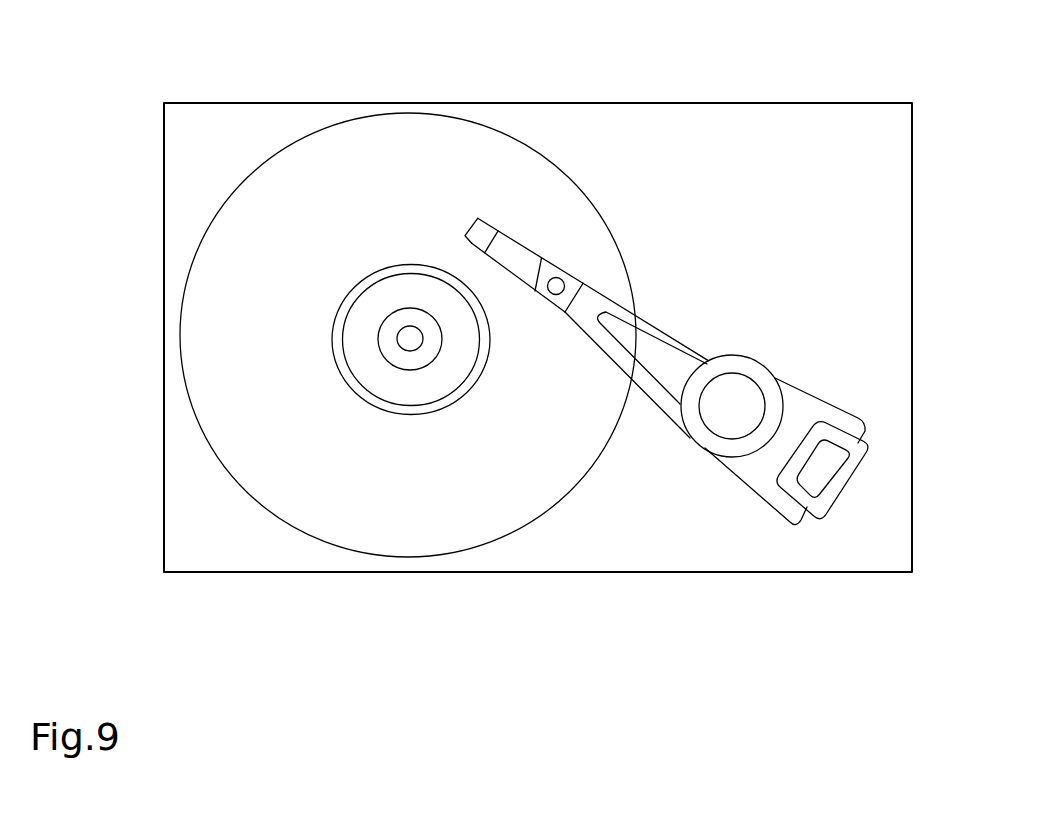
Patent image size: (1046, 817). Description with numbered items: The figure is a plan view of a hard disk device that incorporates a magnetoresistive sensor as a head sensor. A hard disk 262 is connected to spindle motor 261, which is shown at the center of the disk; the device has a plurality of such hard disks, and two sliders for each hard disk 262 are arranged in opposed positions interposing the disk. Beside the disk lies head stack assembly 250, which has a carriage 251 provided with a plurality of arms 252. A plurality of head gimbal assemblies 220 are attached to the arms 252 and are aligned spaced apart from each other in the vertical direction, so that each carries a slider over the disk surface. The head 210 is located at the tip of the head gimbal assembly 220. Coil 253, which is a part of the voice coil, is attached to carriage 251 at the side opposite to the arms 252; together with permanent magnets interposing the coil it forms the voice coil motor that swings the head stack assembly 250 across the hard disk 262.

The magnetic head 210 is at (491, 228).
The head gimbal assembly 220 is at (527, 283).
The head stack assembly 250 is at (736, 480).
The carriage 251 is at (735, 355).
The arm 252 is at (660, 404).
The coil 253 is at (856, 483).
The spindle motor 261 is at (410, 351).
The hard disk 262 is at (323, 541).